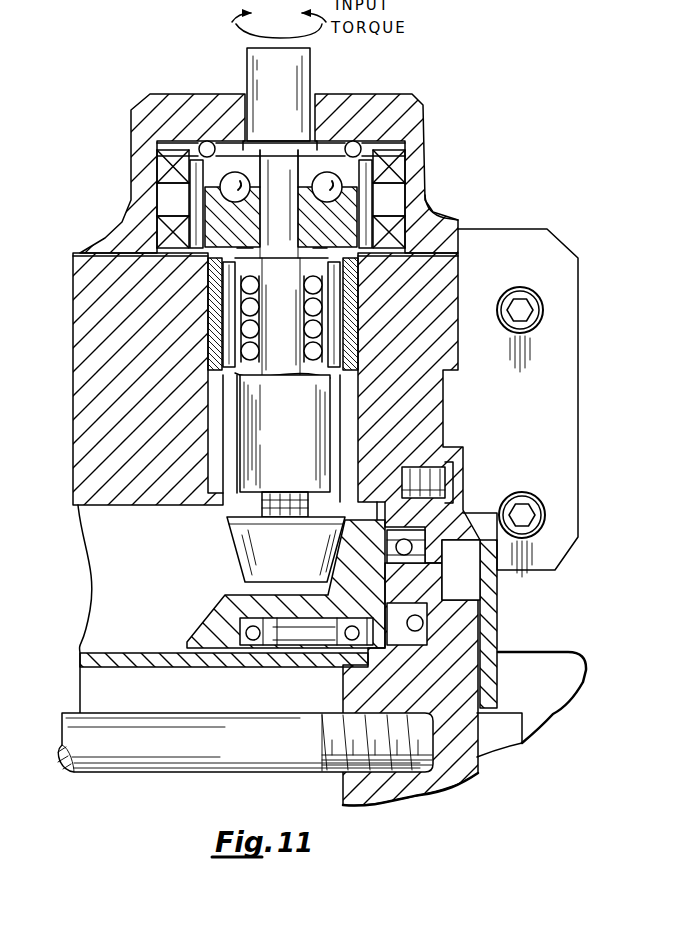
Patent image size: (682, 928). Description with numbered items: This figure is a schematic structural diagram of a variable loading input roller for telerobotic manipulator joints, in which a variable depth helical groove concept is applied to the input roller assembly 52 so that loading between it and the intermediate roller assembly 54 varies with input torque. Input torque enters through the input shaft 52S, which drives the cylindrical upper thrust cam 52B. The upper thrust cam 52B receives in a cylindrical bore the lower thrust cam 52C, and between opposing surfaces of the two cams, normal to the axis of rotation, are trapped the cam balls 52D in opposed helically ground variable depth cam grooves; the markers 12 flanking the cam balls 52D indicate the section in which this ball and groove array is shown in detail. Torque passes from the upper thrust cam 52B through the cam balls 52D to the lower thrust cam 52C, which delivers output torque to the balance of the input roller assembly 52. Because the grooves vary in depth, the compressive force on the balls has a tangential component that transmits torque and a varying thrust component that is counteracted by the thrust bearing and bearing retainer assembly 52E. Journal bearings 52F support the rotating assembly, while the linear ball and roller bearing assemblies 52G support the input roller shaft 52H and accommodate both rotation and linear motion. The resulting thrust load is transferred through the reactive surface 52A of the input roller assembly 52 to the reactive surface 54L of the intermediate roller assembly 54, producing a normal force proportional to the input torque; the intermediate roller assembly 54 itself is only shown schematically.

The balls 12 is at (193, 200).
The input roller assembly 52 is at (300, 424).
The reactive surface 52A is at (240, 535).
The upper thrust cam 52B is at (400, 190).
The lower thrust cam 52C is at (428, 218).
The cam balls 52D is at (318, 202).
The thrust bearing and bearing retainer assembly 52E is at (195, 125).
The journal bearings 52F is at (176, 202).
The linear ball and roller bearing assemblies 52G is at (206, 350).
The input roller shaft 52H is at (290, 352).
The input shaft 52S is at (272, 68).
The intermediate roller assembly 54 is at (460, 615).
The reactive surface 54L is at (327, 530).